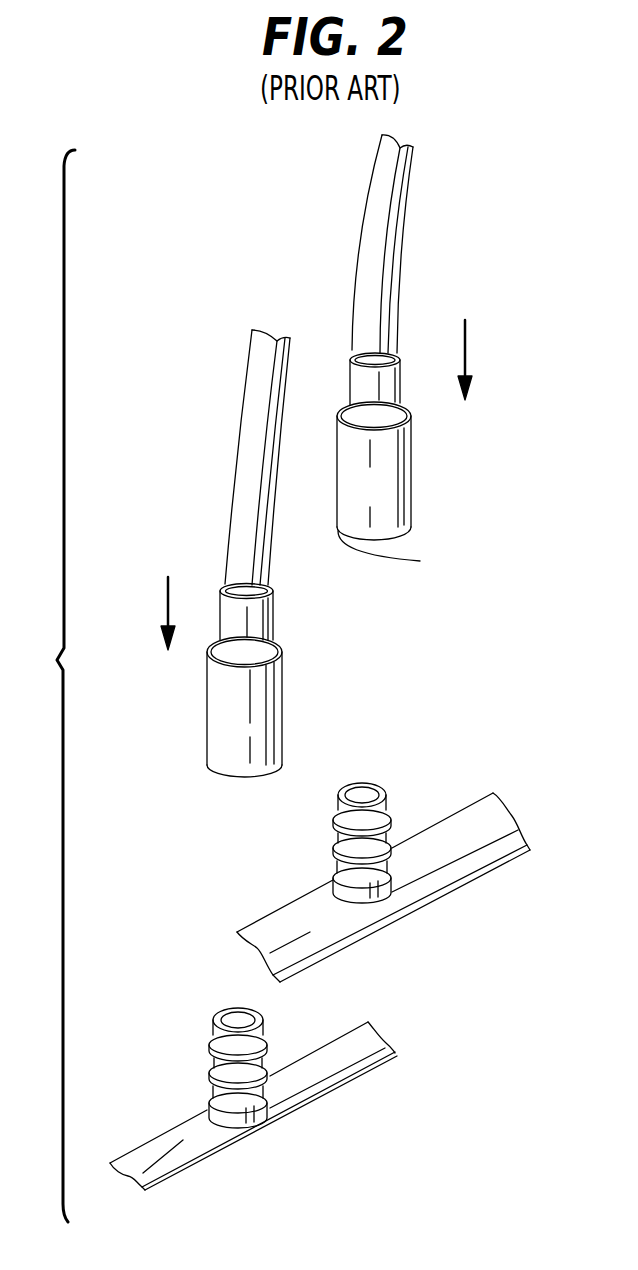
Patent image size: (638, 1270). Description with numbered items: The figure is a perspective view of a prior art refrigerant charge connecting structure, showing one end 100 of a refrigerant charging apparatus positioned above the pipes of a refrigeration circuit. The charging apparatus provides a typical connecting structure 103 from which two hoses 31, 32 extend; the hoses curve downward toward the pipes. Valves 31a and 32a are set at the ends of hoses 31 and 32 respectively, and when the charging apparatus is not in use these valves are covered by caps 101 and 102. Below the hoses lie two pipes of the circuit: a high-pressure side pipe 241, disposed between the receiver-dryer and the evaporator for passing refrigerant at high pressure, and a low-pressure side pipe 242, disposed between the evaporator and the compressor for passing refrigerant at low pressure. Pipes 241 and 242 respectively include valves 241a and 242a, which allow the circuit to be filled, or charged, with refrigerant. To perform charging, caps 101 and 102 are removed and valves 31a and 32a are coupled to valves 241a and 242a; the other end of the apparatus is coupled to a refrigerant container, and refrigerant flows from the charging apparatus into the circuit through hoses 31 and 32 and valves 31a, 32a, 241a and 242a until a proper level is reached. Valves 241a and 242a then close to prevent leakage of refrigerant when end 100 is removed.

The end of refrigerant charging apparatus 100 is at (395, 651).
The connecting structure 103 is at (184, 288).
The hose 31 is at (245, 447).
The hose 32 is at (382, 256).
The valve 31a is at (221, 707).
The valve 32a is at (402, 465).
The cap 101 is at (225, 774).
The cap 102 is at (407, 520).
The high-pressure side pipe 241 is at (190, 1150).
The low-pressure side pipe 242 is at (485, 848).
The valve 241a is at (265, 1031).
The valve 242a is at (387, 808).